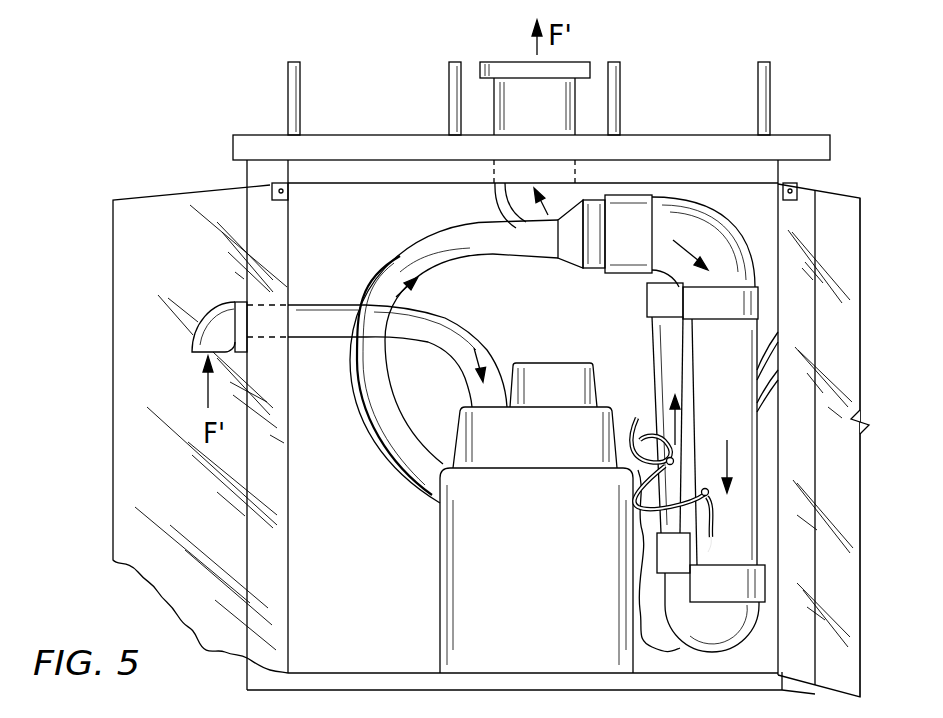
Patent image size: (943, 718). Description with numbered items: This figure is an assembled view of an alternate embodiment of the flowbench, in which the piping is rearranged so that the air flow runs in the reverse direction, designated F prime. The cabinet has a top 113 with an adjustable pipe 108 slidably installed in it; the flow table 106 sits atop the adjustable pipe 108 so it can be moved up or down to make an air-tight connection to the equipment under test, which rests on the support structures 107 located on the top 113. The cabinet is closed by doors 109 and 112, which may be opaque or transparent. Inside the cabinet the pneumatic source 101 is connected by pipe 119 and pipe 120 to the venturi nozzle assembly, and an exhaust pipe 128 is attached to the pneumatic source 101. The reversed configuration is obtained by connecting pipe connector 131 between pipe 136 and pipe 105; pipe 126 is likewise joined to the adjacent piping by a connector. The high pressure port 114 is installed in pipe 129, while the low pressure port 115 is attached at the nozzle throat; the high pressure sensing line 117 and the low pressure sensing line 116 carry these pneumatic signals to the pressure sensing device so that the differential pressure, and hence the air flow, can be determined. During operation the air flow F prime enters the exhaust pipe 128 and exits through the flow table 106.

The pneumatic source 101 is at (440, 562).
The pipe 105 is at (709, 397).
The flow table 106 is at (588, 66).
The support structures 107 is at (300, 112).
The adjustable pipe 108 is at (496, 96).
The door 109 is at (186, 195).
The door 112 is at (856, 208).
The top 113 is at (823, 133).
The high pressure port 114 is at (633, 474).
The low pressure port 115 is at (705, 520).
The low pressure sensing line 116 is at (640, 532).
The high pressure sensing line 117 is at (640, 422).
The pipe 119 is at (315, 304).
The pipe 120 is at (692, 640).
The pipe 126 is at (498, 208).
The exhaust pipe 128 is at (218, 305).
The pipe 129 is at (656, 358).
The pipe connector 131 is at (640, 200).
The pipe 136 is at (470, 266).